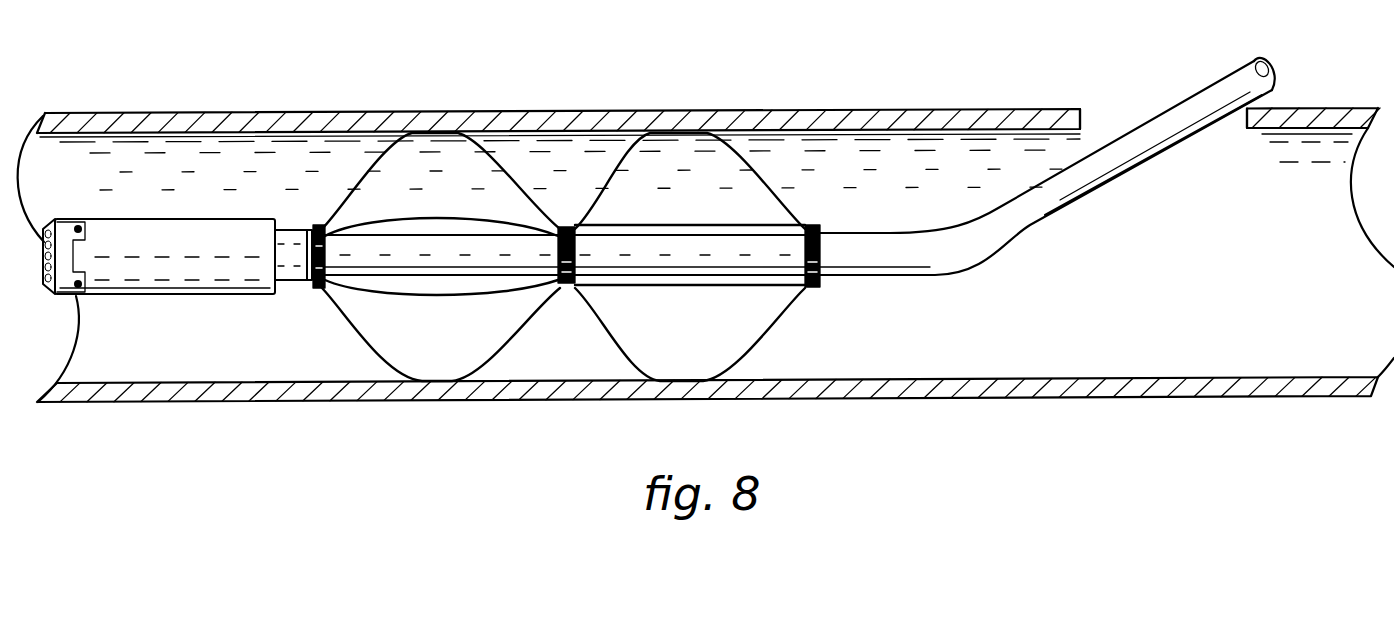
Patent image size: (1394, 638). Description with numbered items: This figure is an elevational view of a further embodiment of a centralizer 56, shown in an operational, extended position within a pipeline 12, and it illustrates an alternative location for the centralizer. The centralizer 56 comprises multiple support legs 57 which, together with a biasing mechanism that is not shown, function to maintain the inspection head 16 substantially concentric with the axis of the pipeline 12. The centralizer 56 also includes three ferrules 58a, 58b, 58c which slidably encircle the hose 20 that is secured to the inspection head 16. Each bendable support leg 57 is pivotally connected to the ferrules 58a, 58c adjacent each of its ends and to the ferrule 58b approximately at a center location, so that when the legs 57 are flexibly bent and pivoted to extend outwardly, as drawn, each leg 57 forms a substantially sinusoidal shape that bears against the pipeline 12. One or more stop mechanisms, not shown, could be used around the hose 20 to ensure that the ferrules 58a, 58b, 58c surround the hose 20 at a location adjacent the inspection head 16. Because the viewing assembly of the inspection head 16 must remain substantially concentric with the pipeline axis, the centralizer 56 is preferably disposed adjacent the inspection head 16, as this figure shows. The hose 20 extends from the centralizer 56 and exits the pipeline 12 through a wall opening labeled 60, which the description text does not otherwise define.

The pipeline 12 is at (893, 110).
The opening in vessel wall 60 is at (1083, 118).
The inspection head 16 is at (187, 260).
The support legs 57 is at (461, 136).
The ferrule 58a is at (316, 226).
The ferrule 58b is at (563, 290).
The ferrule 58c is at (815, 223).
The hose 20 is at (878, 264).
The centralizer 56 is at (298, 334).